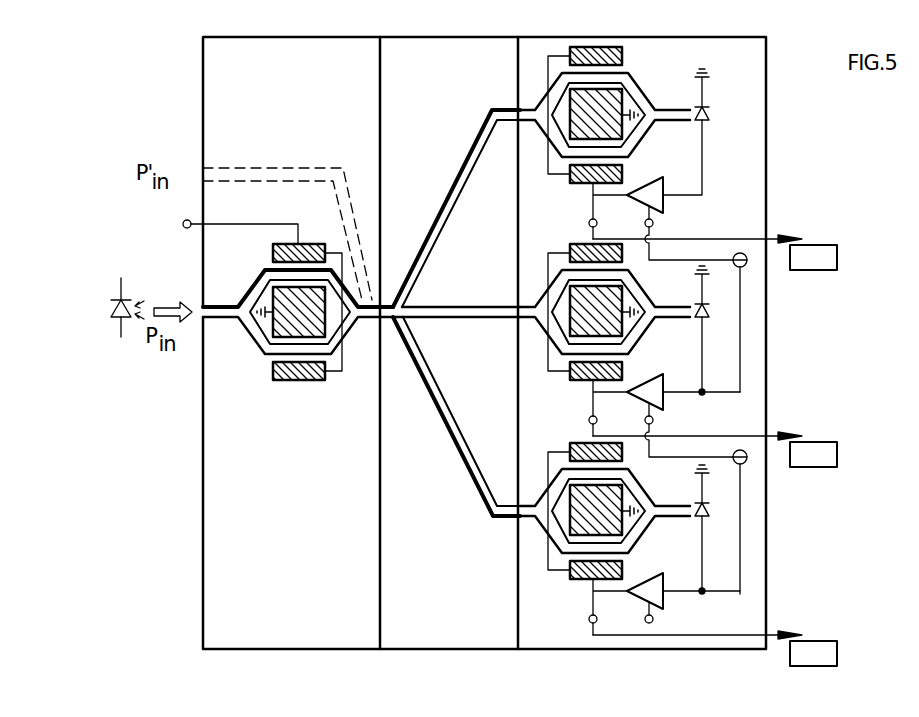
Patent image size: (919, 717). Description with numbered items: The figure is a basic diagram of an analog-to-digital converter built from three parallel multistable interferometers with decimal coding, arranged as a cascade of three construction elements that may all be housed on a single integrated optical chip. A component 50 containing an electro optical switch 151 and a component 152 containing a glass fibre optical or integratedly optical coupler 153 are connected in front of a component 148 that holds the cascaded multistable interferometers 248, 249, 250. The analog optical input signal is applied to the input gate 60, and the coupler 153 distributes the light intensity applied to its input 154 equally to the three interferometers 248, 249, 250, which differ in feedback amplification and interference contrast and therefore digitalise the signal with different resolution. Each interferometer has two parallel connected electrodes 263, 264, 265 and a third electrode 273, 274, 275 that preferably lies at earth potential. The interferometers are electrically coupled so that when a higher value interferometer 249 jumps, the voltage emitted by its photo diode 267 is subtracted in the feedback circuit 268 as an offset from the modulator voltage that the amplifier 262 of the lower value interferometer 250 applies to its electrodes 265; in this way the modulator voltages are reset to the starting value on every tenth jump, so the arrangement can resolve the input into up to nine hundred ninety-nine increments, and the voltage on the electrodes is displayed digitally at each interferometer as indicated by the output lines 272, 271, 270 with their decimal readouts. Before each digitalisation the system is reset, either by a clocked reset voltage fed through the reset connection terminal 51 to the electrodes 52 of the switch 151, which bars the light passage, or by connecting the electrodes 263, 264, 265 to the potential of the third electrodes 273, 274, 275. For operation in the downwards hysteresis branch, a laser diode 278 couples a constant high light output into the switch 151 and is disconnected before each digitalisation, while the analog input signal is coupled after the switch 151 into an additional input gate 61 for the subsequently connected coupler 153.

The component 50 is at (305, 645).
The reset connection terminal 51 is at (186, 229).
The electrodes 52 is at (312, 244).
The input gate 60 is at (214, 306).
The additional input gate 61 is at (376, 304).
The component 148 is at (575, 646).
The electro optical switch 151 is at (247, 347).
The component 152 is at (435, 645).
The 1x3 coupler 153 is at (393, 343).
The input 154 is at (396, 309).
The multistable interferometer 248 is at (654, 547).
The multistable interferometer 249 is at (654, 411).
The multistable interferometer 250 is at (536, 143).
The amplifier 262 is at (663, 208).
The electrodes 263 is at (547, 527).
The electrodes 264 is at (547, 327).
The electrodes 265 is at (622, 57).
The photo diode 267 is at (763, 329).
The feedback circuit 268 is at (740, 305).
The output line 270 is at (715, 629).
The output line 271 is at (715, 432).
The output line 272 is at (775, 238).
The third electrode 273 is at (632, 525).
The third electrode 274 is at (630, 327).
The third electrode 275 is at (622, 125).
The laser diode 278 is at (118, 338).